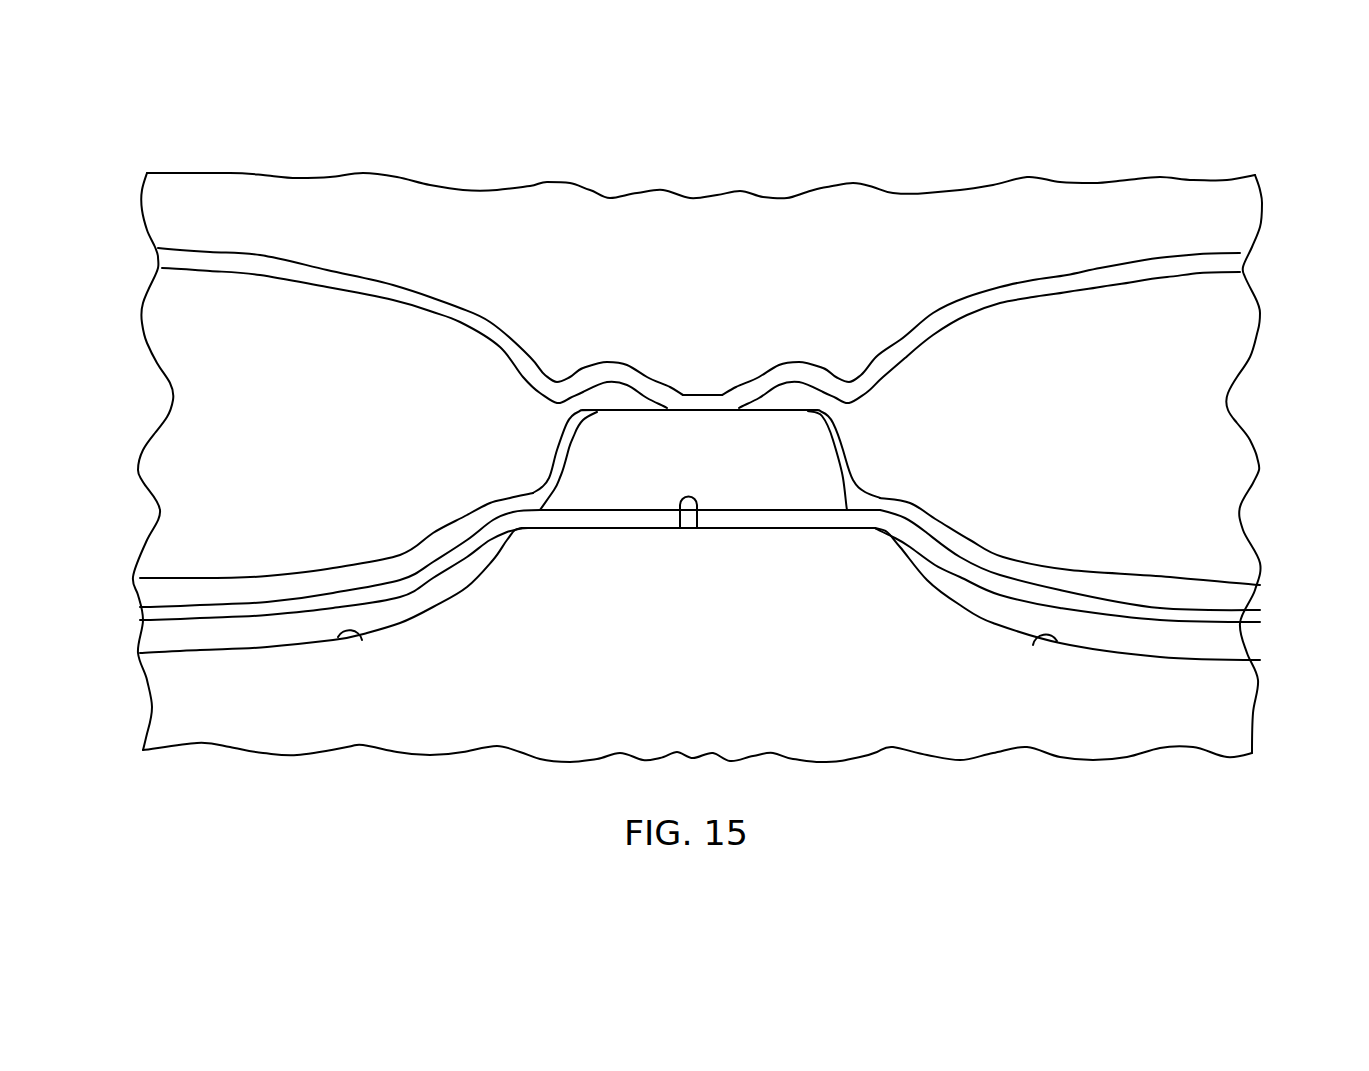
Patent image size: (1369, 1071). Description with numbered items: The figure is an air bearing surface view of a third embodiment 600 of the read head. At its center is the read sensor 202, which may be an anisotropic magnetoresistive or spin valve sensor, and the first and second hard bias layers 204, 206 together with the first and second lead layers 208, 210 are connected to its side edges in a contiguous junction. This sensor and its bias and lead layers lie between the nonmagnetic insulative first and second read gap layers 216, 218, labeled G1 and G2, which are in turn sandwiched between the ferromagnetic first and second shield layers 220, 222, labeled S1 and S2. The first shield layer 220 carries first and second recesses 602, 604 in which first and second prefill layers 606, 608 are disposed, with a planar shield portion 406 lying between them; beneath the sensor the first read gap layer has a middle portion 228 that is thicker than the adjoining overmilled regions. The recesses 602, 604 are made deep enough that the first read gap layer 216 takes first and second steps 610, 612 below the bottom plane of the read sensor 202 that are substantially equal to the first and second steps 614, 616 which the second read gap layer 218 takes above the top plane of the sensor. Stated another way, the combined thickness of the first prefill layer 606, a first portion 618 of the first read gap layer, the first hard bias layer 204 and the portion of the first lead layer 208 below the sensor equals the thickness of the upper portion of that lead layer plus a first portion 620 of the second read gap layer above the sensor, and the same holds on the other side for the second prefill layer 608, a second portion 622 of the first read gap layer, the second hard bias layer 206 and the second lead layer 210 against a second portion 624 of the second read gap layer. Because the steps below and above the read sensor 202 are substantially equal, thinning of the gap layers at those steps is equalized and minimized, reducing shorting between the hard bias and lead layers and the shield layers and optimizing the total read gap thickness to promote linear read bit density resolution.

The third embodiment read head 600 is at (696, 424).
The read sensor 202 is at (813, 493).
The first hard bias layer 204 is at (147, 596).
The second hard bias layer 206 is at (1252, 600).
The first lead layer 208 is at (160, 435).
The second lead layer 210 is at (1230, 440).
The first read gap layer 216 is at (757, 520).
The second read gap layer 218 is at (640, 375).
The first shield layer 220 is at (158, 718).
The second shield layer 222 is at (1250, 210).
The middle portion of first read gap layer 228 is at (603, 528).
The planar shield portion 406 is at (677, 530).
The first recess 602 is at (362, 640).
The second recess 604 is at (1033, 645).
The first prefill layer 606 is at (334, 624).
The second prefill layer 608 is at (1067, 626).
The first step of first read gap layer 610 is at (413, 592).
The second step of first read gap layer 612 is at (1063, 595).
The first step of second read gap layer 614 is at (490, 323).
The second step of second read gap layer 616 is at (910, 328).
The first portion of first read gap layer 618 is at (290, 605).
The first portion of second read gap layer 620 is at (420, 305).
The second portion of first read gap layer 622 is at (1117, 608).
The second portion of second read gap layer 624 is at (981, 310).
The first read gap layer G1 is at (1183, 617).
The second read gap layer G2 is at (1107, 288).
The first shield layer S1 is at (645, 718).
The second shield layer S2 is at (751, 235).